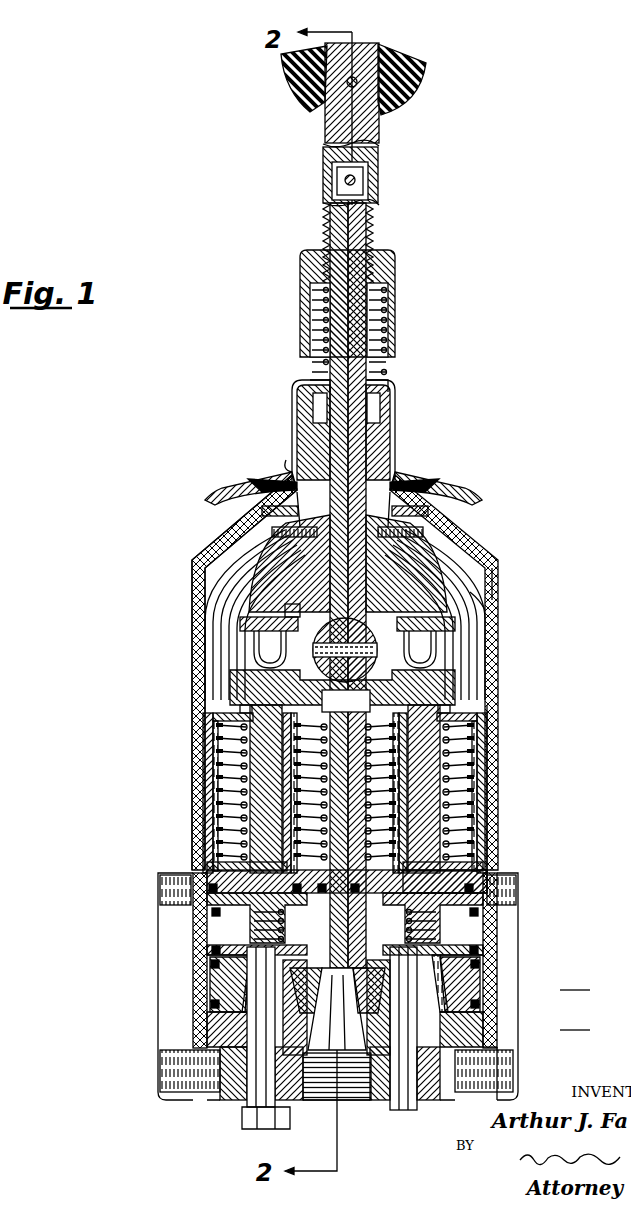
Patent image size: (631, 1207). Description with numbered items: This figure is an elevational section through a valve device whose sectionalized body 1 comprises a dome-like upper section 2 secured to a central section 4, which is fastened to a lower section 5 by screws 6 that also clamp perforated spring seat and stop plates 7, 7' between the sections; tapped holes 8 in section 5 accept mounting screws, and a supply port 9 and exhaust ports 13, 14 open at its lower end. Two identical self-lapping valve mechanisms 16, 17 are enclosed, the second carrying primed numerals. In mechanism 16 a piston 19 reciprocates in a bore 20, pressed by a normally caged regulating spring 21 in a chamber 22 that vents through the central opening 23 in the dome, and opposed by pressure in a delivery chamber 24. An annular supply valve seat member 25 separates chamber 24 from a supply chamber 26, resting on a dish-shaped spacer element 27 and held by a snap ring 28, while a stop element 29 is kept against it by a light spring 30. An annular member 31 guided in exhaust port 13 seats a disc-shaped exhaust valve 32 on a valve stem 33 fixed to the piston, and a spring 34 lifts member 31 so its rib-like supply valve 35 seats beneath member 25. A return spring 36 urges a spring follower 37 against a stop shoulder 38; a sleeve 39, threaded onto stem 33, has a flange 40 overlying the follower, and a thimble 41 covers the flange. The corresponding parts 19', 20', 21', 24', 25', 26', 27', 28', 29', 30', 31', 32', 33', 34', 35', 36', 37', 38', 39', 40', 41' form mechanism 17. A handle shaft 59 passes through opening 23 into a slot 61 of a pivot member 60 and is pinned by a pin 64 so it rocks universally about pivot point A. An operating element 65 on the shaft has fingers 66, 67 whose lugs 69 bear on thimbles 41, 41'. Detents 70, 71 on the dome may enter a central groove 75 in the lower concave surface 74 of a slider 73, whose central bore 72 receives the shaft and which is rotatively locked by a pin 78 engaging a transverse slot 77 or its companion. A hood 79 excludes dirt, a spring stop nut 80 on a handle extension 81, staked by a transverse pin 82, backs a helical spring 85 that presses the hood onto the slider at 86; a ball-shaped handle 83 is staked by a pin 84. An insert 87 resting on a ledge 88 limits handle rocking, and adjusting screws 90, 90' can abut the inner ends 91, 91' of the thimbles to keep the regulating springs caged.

The sectionalized body 1 is at (196, 792).
The dome-like upper section 2 is at (486, 584).
The central section 4 is at (496, 793).
The lower section 5 is at (503, 1069).
The screws 6 is at (248, 1128).
The perforated spring seat and stop plate 7 is at (310, 865).
The perforated spring seat and stop plate 7' is at (480, 868).
The tapped holes 8 is at (518, 1085).
The supply port 9 is at (330, 1095).
The exhaust port 13 is at (250, 1100).
The exhaust port 14 is at (388, 1100).
The self-lapping valve mechanism 16 is at (228, 1048).
The self-lapping valve mechanism 17 is at (500, 1053).
The piston 19 is at (167, 953).
The piston 19' is at (523, 956).
The bore 20 is at (158, 947).
The bore 20' is at (529, 955).
The regulating spring 21 is at (214, 793).
The regulating spring 21' is at (478, 793).
The chamber 22 is at (240, 606).
The central opening 23 is at (420, 533).
The delivery chamber 24 is at (143, 908).
The delivery chamber 24' is at (544, 913).
The annular supply valve seat member 25 is at (194, 990).
The annular supply valve seat member 25' is at (589, 992).
The supply chamber 26 is at (158, 1029).
The supply chamber 26' is at (589, 1030).
The annular dish-shaped spacer element 27 is at (217, 1007).
The annular dish-shaped spacer element 27' is at (501, 1029).
The snap ring 28 is at (189, 983).
The snap ring 28' is at (501, 984).
The annular dish-shaped stop element 29 is at (217, 947).
The annular dish-shaped stop element 29' is at (473, 952).
The light helical spring 30 is at (206, 920).
The light helical spring 30' is at (485, 922).
The annular member 31 is at (182, 987).
The annular member 31' is at (511, 990).
The exhaust valve 32 is at (217, 918).
The exhaust valve 32' is at (473, 918).
The valve stem 33 is at (207, 846).
The valve stem 33' is at (483, 849).
The light helical spring 34 is at (215, 1073).
The light helical spring 34' is at (422, 1092).
The supply valve 35 is at (193, 983).
The supply valve 35' is at (497, 983).
The return spring 36 is at (209, 793).
The return spring 36' is at (481, 793).
The annular spring follower 37 is at (187, 792).
The annular spring follower 37' is at (503, 792).
The annular stop shoulder 38 is at (170, 789).
The annular stop shoulder 38' is at (520, 792).
The sleeve 39 is at (227, 792).
The sleeve 39' is at (464, 792).
The flange 40 is at (205, 779).
The flange 40' is at (485, 783).
The thimble 41 is at (190, 685).
The thimble 41' is at (500, 688).
The handle shaft 59 is at (363, 211).
The pivot member 60 is at (345, 664).
The slot 61 is at (247, 623).
The pin 64 is at (440, 615).
The operating element 65 is at (290, 572).
The finger 66 is at (262, 641).
The finger 67 is at (436, 636).
The lugs 69 is at (470, 653).
The detents 70 is at (262, 486).
The detents 71 is at (446, 489).
The central bore 72 is at (312, 436).
The slider 73 is at (378, 444).
The lower concave surface 74 is at (272, 480).
The central groove 75 is at (425, 477).
The transverse slot 77 is at (320, 412).
The pin 78 is at (366, 407).
The hood 79 is at (200, 540).
The spring stop nut 80 is at (395, 268).
The handle extension 81 is at (372, 153).
The transverse pin 82 is at (348, 180).
The handle 83 is at (418, 84).
The transverse pin 84 is at (347, 84).
The helical spring 85 is at (380, 314).
The force transmission point 86 is at (295, 466).
The insert 87 is at (268, 518).
The ledge 88 is at (428, 520).
The adjusting screw 90 is at (174, 796).
The adjusting screw 90' is at (517, 796).
The inner end of thimble 91 is at (190, 690).
The inner end of thimble 91' is at (500, 694).
The pivot point A is at (472, 598).